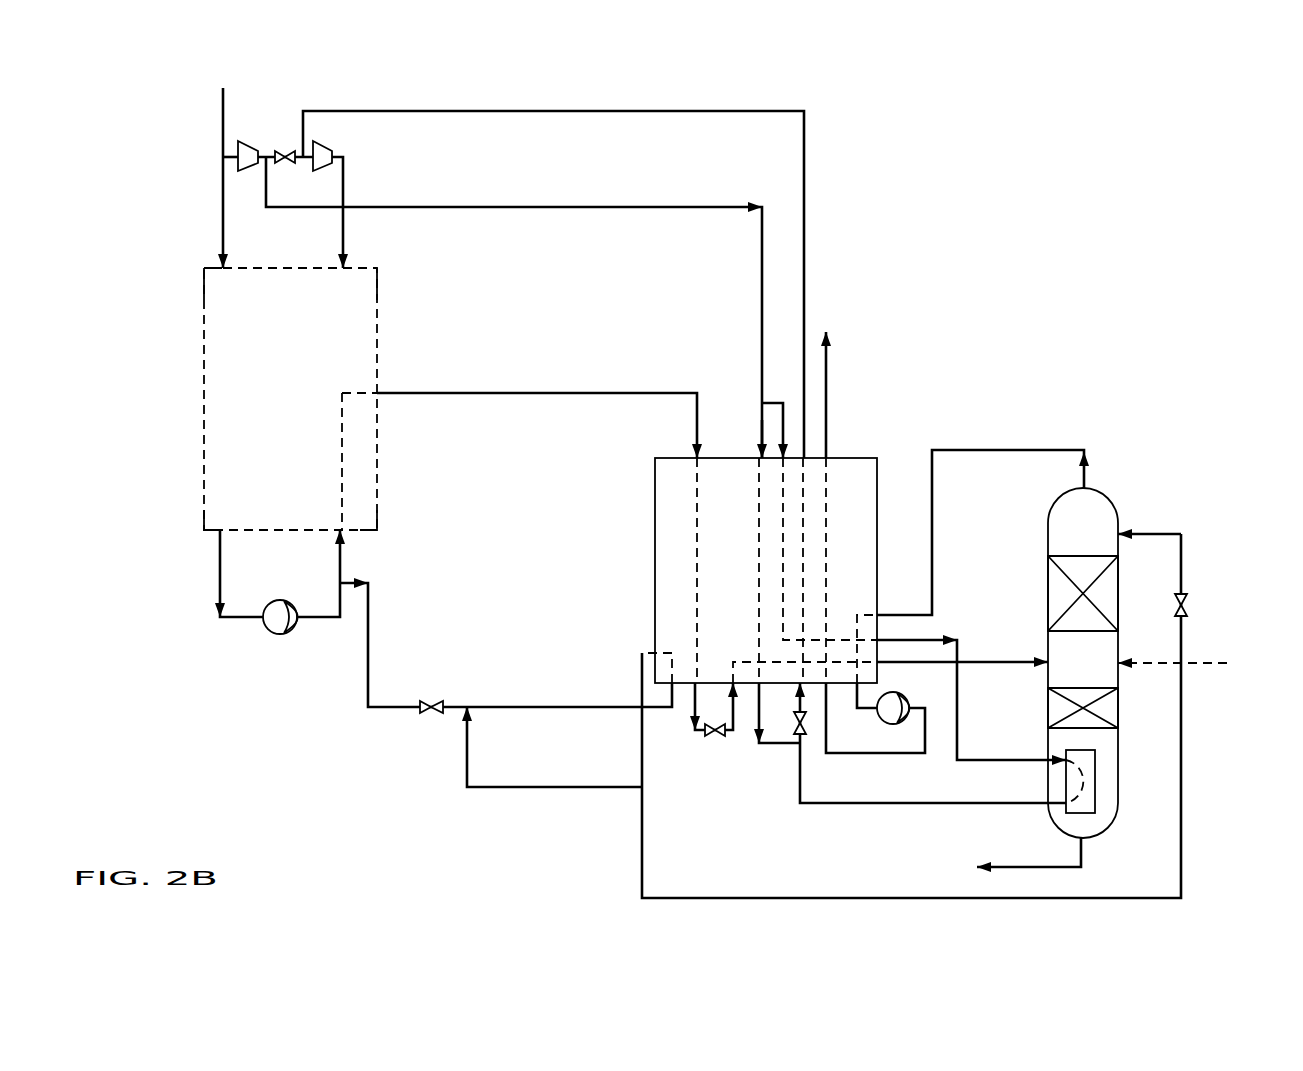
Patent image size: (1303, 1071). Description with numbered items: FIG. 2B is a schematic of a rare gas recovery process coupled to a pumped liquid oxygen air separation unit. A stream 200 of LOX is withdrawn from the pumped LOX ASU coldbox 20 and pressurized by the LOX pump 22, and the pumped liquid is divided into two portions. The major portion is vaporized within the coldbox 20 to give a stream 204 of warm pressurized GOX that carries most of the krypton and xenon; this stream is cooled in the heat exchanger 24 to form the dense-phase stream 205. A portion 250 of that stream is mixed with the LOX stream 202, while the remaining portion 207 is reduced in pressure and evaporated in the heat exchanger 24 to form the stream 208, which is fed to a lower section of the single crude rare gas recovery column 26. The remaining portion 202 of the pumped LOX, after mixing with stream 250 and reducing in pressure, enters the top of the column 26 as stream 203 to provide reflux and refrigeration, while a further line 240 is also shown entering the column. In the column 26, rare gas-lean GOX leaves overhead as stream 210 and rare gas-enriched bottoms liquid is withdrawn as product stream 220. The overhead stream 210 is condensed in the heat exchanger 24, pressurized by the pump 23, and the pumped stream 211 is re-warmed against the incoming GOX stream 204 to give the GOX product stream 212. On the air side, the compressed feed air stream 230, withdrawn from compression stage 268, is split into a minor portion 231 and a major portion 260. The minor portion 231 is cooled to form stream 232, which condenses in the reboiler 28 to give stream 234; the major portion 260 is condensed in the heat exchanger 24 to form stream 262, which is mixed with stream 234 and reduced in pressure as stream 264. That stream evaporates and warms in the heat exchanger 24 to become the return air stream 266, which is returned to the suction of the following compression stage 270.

The pumped LOX ASU coldbox 20 is at (377, 305).
The LOX pump 22 is at (280, 634).
The pump 23 is at (900, 693).
The heat exchanger 24 is at (655, 518).
The crude rare gas recovery column 26 is at (1106, 498).
The reboiler 28 is at (1095, 790).
The stream of LOX 200 is at (220, 570).
The LOX stream 202 is at (368, 657).
The stream 203 is at (1181, 582).
The stream of warm pressurized GOX 204 is at (520, 392).
The stream 205 is at (695, 702).
The remaining portion 207 is at (700, 734).
The stream 208 is at (975, 662).
The overhead rare gas-lean GOX stream 210 is at (932, 520).
The pumped stream 211 is at (893, 752).
The GOX product stream 212 is at (827, 410).
The product stream 220 is at (1015, 867).
The compressed feed air stream 230 is at (488, 207).
The minor portion 231 is at (773, 403).
The cooled stream 232 is at (975, 760).
The stream 234 is at (945, 803).
The steam line 240 is at (1200, 663).
The portion 250 is at (642, 815).
The major portion 260 is at (760, 425).
The stream 262 is at (745, 722).
The stream 264 is at (806, 745).
The return air stream 266 is at (720, 111).
The compression stage 268 is at (248, 139).
The compression stage 270 is at (322, 139).